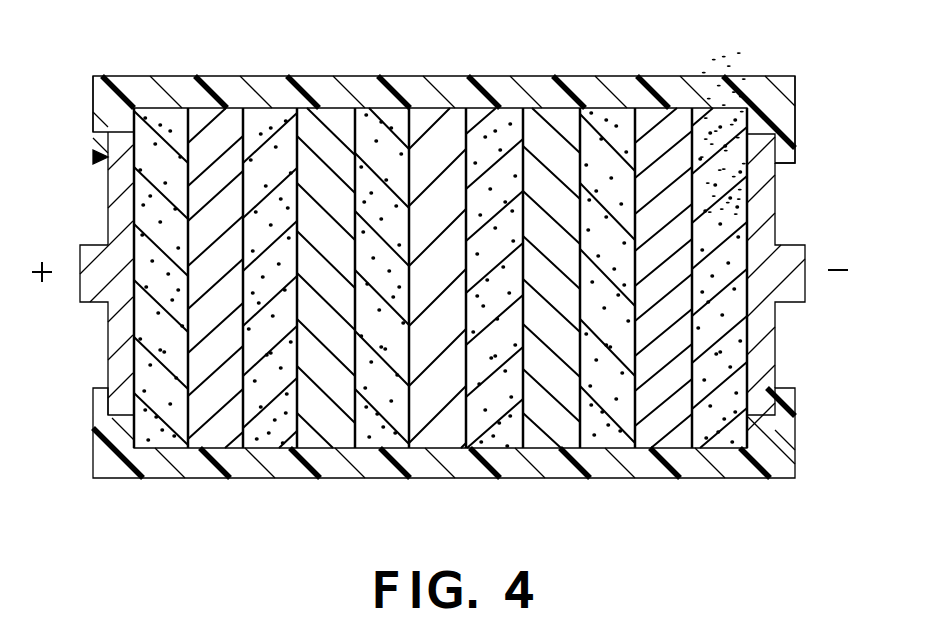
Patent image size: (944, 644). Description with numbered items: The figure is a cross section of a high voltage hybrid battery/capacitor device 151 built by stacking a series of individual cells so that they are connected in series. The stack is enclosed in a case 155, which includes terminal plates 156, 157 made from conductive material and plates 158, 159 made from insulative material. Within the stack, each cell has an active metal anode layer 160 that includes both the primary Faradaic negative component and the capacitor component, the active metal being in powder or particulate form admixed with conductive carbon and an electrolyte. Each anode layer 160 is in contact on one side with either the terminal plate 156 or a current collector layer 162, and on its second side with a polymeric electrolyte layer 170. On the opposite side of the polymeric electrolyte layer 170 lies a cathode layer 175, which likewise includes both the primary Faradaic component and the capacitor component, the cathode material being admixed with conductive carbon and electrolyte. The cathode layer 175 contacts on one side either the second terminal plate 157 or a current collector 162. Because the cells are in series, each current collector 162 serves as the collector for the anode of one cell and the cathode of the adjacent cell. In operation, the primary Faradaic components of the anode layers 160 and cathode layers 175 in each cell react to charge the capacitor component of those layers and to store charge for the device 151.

The high voltage hybrid battery/capacitor device 151 is at (600, 74).
The case 155 is at (800, 116).
The terminal plate 156 is at (767, 213).
The second terminal plate 157 is at (112, 208).
The plate 158 is at (390, 92).
The plate 159 is at (273, 462).
The active metal anode layer 160 is at (268, 112).
The current collector layer 162 is at (322, 432).
The polymeric electrolyte layer 170 is at (207, 432).
The cathode layer 175 is at (168, 114).